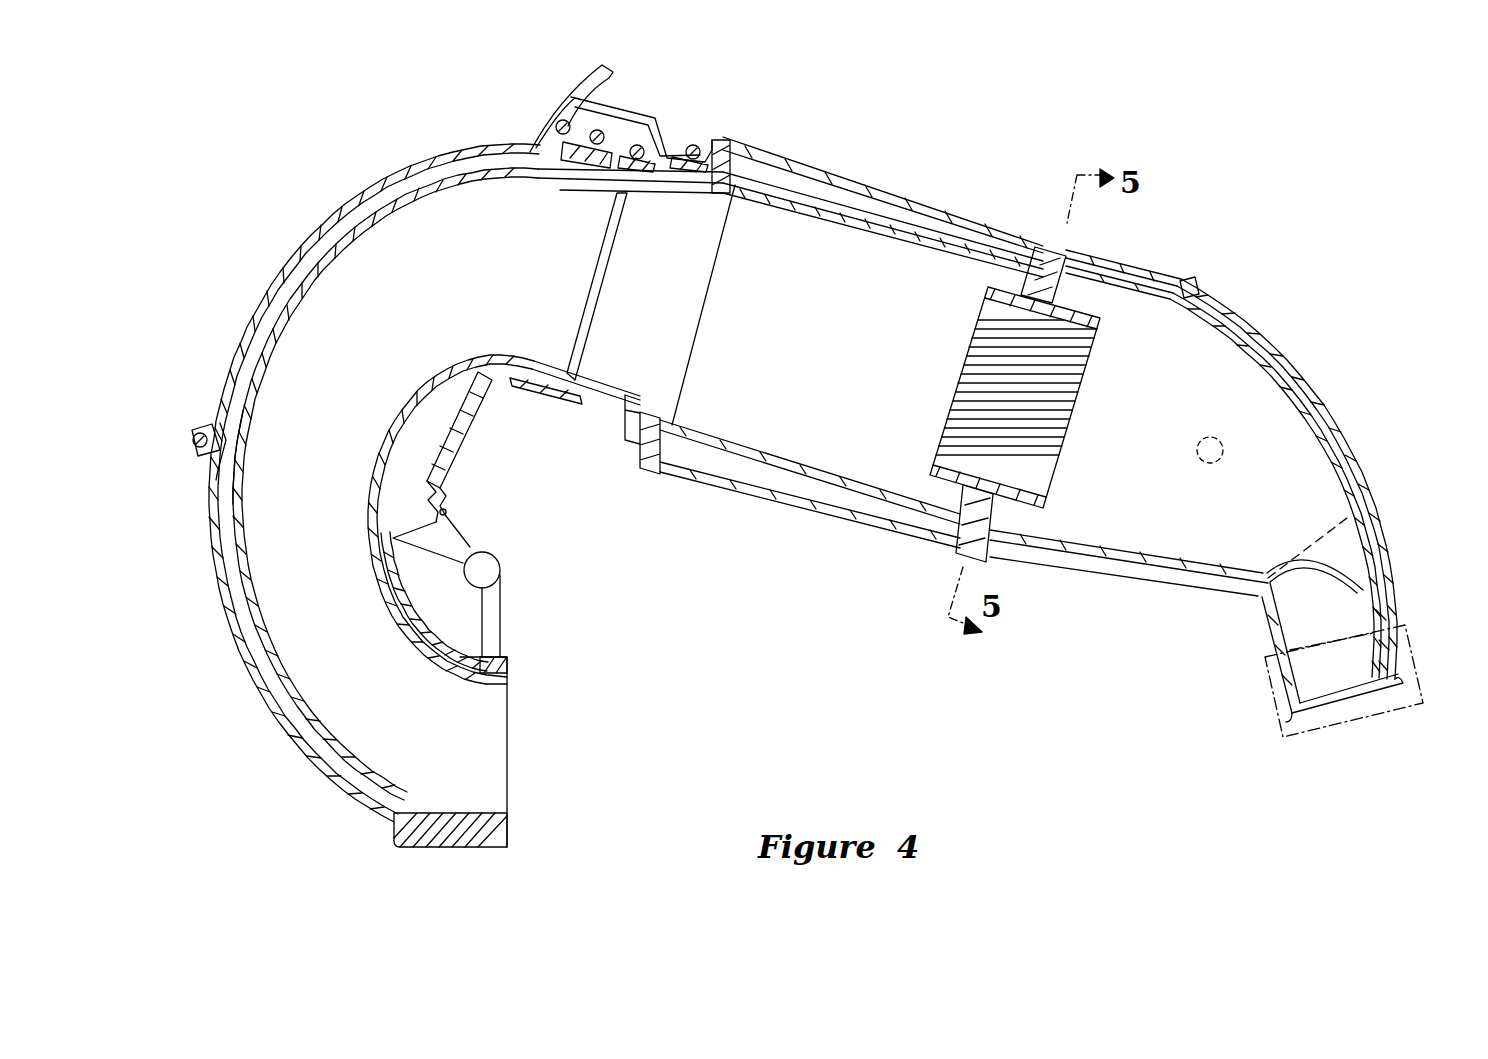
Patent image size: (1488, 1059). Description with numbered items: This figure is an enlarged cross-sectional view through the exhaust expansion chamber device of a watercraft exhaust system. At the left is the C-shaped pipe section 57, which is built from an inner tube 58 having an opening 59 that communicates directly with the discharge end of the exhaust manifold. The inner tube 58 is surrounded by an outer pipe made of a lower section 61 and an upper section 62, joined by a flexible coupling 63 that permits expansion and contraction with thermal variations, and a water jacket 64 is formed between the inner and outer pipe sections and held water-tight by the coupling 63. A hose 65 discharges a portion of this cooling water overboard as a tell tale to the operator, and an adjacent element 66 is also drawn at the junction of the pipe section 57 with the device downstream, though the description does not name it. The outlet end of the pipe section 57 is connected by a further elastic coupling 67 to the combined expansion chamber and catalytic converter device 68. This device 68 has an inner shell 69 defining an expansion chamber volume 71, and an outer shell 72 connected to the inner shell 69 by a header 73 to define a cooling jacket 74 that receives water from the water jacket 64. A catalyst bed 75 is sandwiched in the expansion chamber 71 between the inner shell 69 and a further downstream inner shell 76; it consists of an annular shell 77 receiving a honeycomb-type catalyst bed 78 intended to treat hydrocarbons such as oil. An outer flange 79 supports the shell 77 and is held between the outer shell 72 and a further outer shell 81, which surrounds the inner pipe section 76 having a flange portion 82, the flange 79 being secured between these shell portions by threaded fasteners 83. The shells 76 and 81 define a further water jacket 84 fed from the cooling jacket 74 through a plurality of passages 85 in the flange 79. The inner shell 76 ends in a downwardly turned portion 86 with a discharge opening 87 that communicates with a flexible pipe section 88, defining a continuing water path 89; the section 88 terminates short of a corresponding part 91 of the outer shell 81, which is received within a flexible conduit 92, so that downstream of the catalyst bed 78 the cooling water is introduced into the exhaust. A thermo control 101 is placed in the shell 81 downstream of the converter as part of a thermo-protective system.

The C-shaped pipe section 57 is at (236, 657).
The inner tube 58 is at (303, 287).
The opening 59 is at (507, 700).
The lower section 61 is at (220, 543).
The upper section 62 is at (232, 378).
The flexible coupling 63 is at (447, 513).
The water jacket 64 is at (415, 185).
The hose 65 is at (597, 92).
The latch housing 66 is at (552, 168).
The elastic coupling 67 is at (548, 400).
The combined expansion chamber and catalytic converter device 68 is at (903, 191).
The inner shell 69 is at (755, 455).
The expansion chamber volume 71 is at (810, 325).
The outer shell 72 is at (783, 500).
The header 73 is at (647, 470).
The cooling jacket 74 is at (703, 457).
The catalyst bed 75 is at (1093, 367).
The downstream inner shell 76 is at (1253, 347).
The annular shell 77 is at (1045, 505).
The honeycomb-type catalyst bed 78 is at (1045, 437).
The outer flange 79 is at (1060, 247).
The further outer shell 81 is at (1296, 380).
The flange portion 82 is at (1087, 257).
The threaded fasteners 83 is at (1187, 293).
The further water jacket 84 is at (1063, 548).
The passages 85 is at (935, 538).
The downwardly turned portion 86 is at (1383, 540).
The discharge opening 87 is at (1307, 600).
The flexible pipe section 88 is at (1297, 637).
The water path 89 is at (1400, 647).
The corresponding part of the outer shell 91 is at (1403, 660).
The flexible conduit 92 is at (1265, 677).
The thermo control 101 is at (1223, 443).